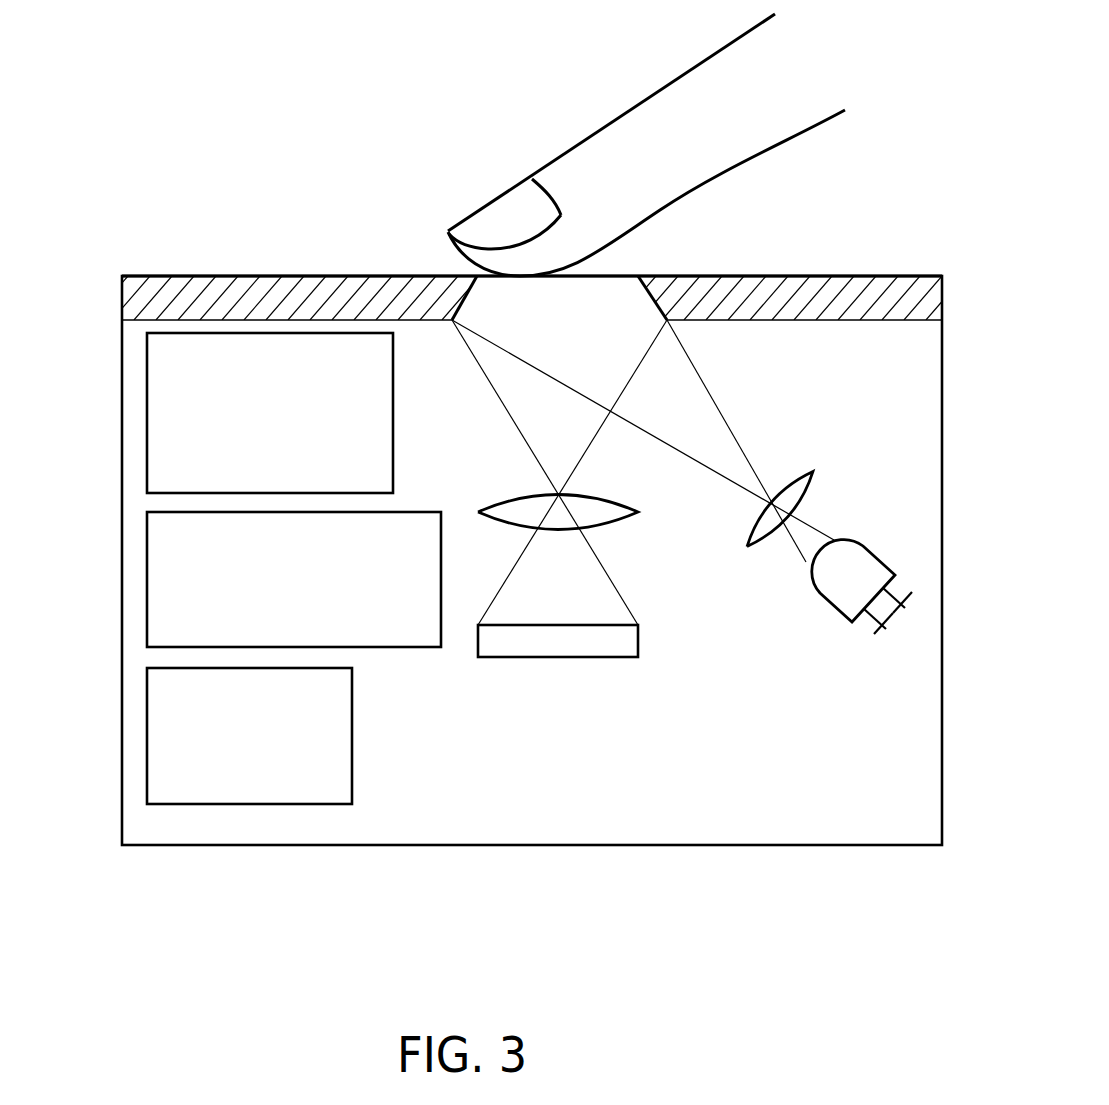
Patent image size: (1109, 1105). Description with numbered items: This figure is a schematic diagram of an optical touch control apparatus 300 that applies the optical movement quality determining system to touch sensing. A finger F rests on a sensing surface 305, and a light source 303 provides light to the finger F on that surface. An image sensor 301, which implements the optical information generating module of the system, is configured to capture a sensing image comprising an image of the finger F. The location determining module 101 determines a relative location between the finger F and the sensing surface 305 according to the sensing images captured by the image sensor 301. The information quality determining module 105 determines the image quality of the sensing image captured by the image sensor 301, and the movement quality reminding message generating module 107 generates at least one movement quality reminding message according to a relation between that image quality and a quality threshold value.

The optical touch control apparatus 300 is at (302, 97).
The sensing surface 305 is at (295, 302).
The finger F is at (610, 137).
The information quality determining module 105 is at (147, 428).
The movement quality reminding message generating module 107 is at (147, 581).
The location determining module 101 is at (147, 739).
The image sensor 301 is at (638, 640).
The light source 303 is at (893, 570).